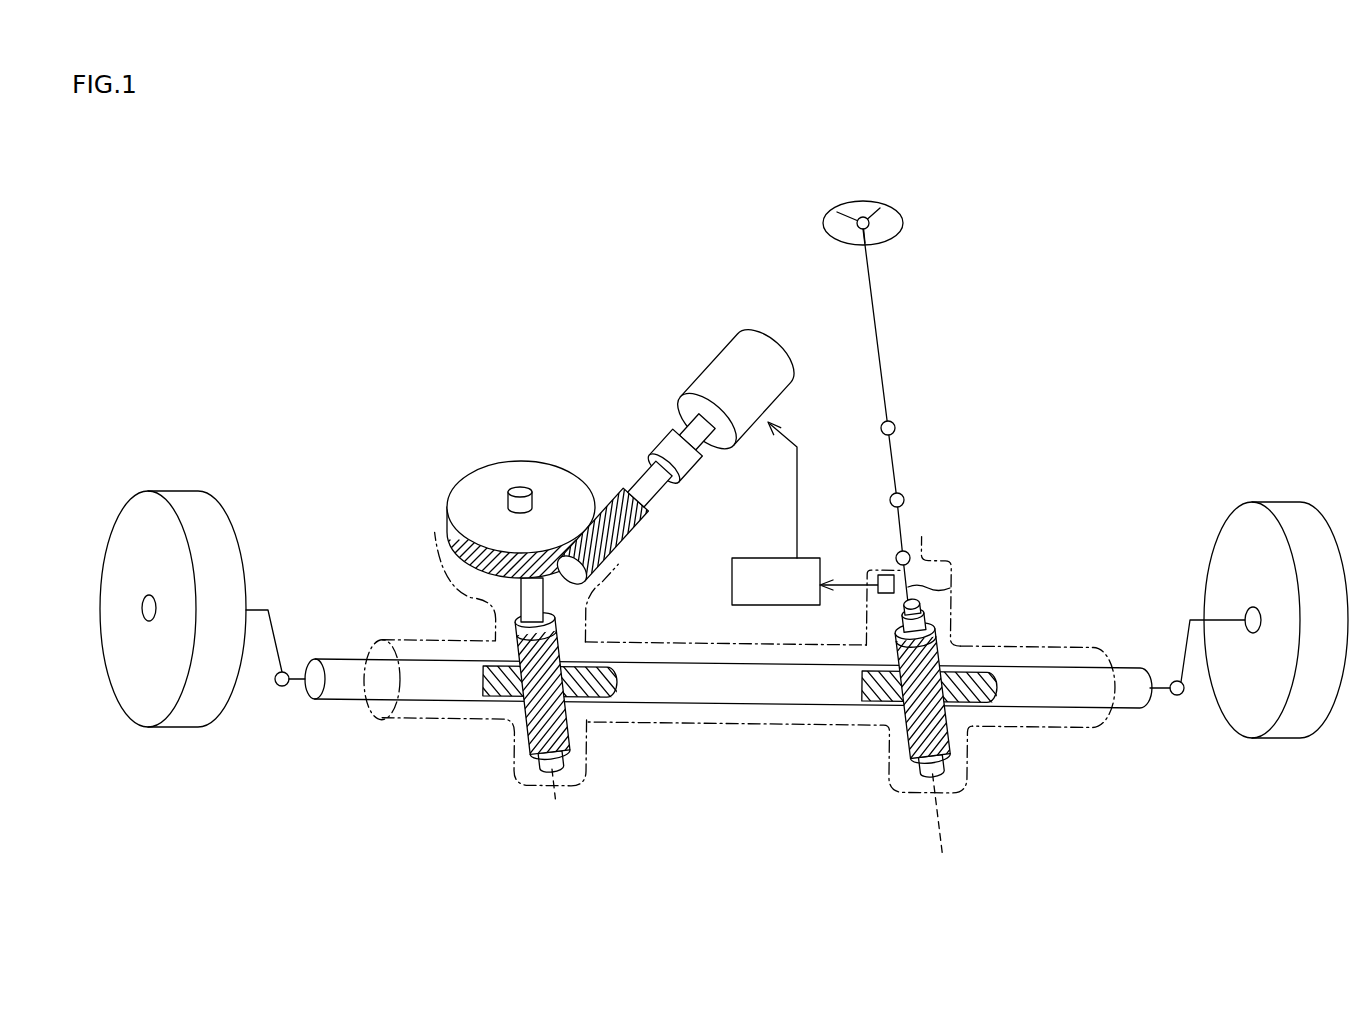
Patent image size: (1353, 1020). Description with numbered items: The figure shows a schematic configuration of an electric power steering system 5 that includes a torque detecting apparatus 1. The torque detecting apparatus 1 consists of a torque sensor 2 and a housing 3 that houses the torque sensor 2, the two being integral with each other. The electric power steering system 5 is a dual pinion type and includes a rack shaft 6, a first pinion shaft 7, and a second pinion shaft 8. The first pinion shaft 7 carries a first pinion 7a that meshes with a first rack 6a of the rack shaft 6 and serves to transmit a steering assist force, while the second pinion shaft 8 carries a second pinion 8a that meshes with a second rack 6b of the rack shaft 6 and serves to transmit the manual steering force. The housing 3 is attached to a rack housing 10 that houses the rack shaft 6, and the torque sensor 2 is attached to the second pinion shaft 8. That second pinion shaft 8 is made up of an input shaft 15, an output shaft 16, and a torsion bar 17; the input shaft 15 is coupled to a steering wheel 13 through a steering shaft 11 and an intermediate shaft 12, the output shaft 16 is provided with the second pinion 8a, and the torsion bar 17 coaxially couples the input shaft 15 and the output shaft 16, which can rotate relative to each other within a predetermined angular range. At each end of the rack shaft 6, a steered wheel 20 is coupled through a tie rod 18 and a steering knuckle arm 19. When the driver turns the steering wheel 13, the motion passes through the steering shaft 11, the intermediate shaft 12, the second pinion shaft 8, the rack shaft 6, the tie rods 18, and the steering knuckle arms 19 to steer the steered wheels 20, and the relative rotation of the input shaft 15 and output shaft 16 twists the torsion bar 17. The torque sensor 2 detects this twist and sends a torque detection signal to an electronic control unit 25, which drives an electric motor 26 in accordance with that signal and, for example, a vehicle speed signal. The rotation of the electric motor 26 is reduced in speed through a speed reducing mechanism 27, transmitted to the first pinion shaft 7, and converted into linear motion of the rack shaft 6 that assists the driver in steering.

The torque detecting apparatus 1 is at (955, 575).
The torque sensor 2 is at (883, 575).
The housing 3 is at (935, 552).
The electric power steering system 5 is at (907, 371).
The rack shaft 6 is at (778, 703).
The first rack 6a is at (597, 680).
The second rack 6b is at (983, 681).
The first pinion shaft 7 is at (523, 717).
The first pinion 7a is at (537, 760).
The second pinion shaft 8 is at (950, 720).
The second pinion 8a is at (942, 750).
The rack housing 10 is at (1048, 648).
The steering shaft 11 is at (877, 313).
The intermediate shaft 12 is at (893, 463).
The steering wheel 13 is at (860, 201).
The input shaft 15 is at (902, 523).
The output shaft 16 is at (874, 638).
The torsion bar 17 is at (950, 588).
The tie rod 18 is at (293, 687).
The steering knuckle arm 19 is at (280, 633).
The steered wheel 20 is at (142, 705).
The electronic control unit (ECU) 25 is at (732, 580).
The electric motor 26 is at (722, 343).
The speed reducing mechanism 27 is at (590, 460).